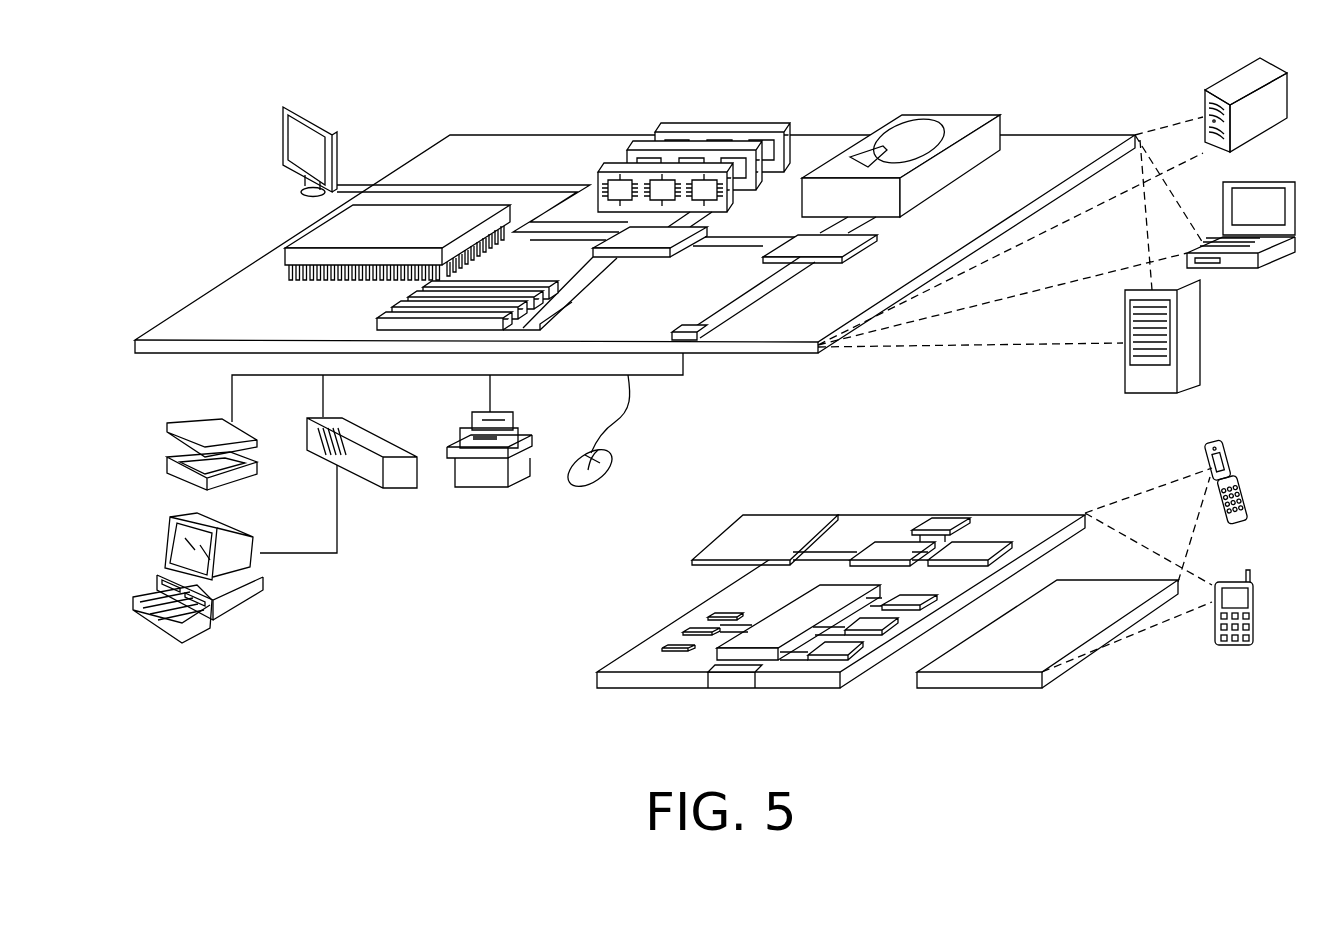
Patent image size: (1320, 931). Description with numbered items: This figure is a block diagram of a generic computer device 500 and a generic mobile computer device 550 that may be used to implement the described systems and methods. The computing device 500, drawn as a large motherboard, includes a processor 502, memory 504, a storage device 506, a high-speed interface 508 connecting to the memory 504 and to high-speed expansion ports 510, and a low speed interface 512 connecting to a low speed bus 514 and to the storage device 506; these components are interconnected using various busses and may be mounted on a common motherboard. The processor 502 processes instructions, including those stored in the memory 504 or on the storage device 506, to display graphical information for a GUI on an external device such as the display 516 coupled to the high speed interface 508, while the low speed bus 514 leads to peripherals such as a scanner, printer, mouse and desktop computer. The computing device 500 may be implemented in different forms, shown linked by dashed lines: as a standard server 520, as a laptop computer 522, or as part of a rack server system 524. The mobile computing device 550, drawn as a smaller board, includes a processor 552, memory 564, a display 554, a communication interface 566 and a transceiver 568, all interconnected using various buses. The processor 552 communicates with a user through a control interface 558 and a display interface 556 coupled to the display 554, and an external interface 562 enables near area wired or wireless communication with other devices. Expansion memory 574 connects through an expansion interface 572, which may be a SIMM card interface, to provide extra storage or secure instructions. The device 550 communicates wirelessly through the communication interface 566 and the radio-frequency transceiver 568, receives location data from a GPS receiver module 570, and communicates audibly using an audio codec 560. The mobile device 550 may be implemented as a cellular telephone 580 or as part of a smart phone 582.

The computing device 500 is at (403, 84).
The processor 502 is at (310, 234).
The memory 504 is at (723, 130).
The storage device 506 is at (940, 113).
The high-speed interface 508 is at (662, 236).
The high-speed expansion ports 510 is at (398, 308).
The low speed interface 512 is at (796, 243).
The low speed bus 514 is at (688, 328).
The display 516 is at (288, 108).
The standard server 520 is at (1223, 86).
The laptop computer 522 is at (1269, 179).
The rack server system 524 is at (1200, 340).
The mobile computer device 550 is at (556, 691).
The processor 552 is at (768, 626).
The display 554 is at (1084, 594).
The display interface 556 is at (845, 650).
The control interface 558 is at (878, 622).
The audio codec 560 is at (915, 600).
The external interface 562 is at (733, 678).
The memory 564 is at (690, 629).
The communication interface 566 is at (893, 546).
The transceiver 568 is at (978, 546).
The GPS receiver module 570 is at (940, 522).
The expansion interface 572 is at (826, 526).
The expansion memory 574 is at (746, 525).
The cellular telephone 580 is at (1220, 446).
The smart phone 582 is at (1232, 580).